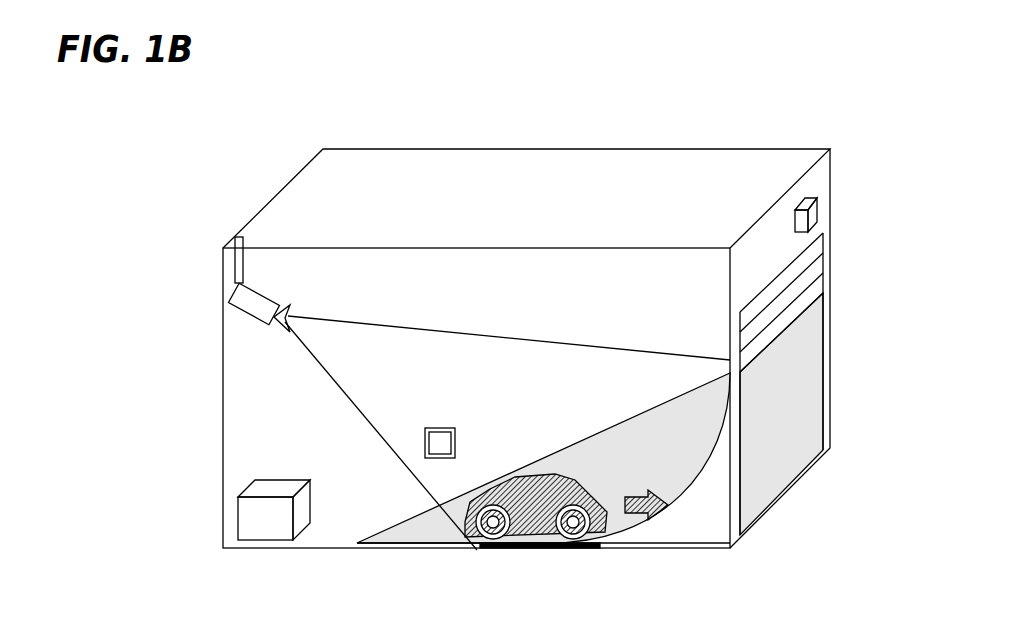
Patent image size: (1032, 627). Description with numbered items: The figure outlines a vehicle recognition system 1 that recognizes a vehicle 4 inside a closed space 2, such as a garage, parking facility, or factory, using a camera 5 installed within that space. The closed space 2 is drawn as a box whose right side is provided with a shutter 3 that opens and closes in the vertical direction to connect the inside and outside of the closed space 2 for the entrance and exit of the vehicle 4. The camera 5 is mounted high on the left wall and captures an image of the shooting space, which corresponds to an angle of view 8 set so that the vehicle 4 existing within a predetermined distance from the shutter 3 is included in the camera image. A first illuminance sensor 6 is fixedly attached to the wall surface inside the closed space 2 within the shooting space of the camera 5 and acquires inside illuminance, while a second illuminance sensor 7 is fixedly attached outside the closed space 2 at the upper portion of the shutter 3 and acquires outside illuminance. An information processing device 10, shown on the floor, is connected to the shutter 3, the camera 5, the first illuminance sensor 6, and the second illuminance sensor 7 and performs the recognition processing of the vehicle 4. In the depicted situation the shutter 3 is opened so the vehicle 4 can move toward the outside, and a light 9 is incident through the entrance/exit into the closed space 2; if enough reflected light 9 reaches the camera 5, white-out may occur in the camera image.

The vehicle recognition system 1 is at (850, 104).
The closed space 2 is at (223, 392).
The shutter 3 is at (824, 266).
The vehicle 4 is at (533, 530).
The camera 5 is at (235, 300).
The first illuminance sensor 6 is at (440, 428).
The second illuminance sensor 7 is at (820, 204).
The angle of view 8 is at (511, 349).
The light 9 is at (816, 372).
The information processing device 10 is at (238, 517).